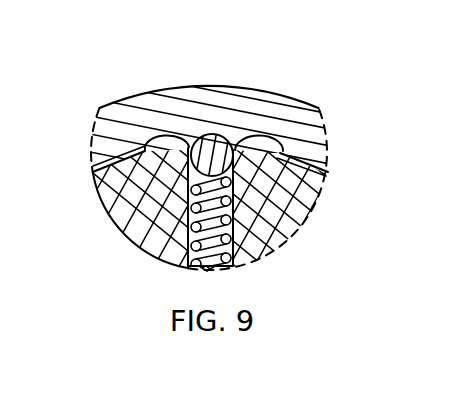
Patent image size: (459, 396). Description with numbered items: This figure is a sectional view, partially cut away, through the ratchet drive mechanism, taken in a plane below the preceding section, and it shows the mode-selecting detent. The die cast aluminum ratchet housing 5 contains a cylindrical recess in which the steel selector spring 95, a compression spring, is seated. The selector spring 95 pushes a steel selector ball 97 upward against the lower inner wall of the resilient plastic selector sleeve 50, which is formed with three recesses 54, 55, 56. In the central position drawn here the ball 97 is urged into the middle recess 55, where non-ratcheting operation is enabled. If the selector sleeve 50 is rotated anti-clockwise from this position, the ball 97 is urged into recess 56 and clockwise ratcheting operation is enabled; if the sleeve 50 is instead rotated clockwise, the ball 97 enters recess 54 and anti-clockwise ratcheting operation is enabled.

The ratchet housing 5 is at (311, 239).
The selector sleeve 50 is at (330, 98).
The recess 54 is at (165, 137).
The recess 55 is at (212, 134).
The recess 56 is at (259, 135).
The selector spring 95 is at (188, 208).
The selector ball 97 is at (224, 155).